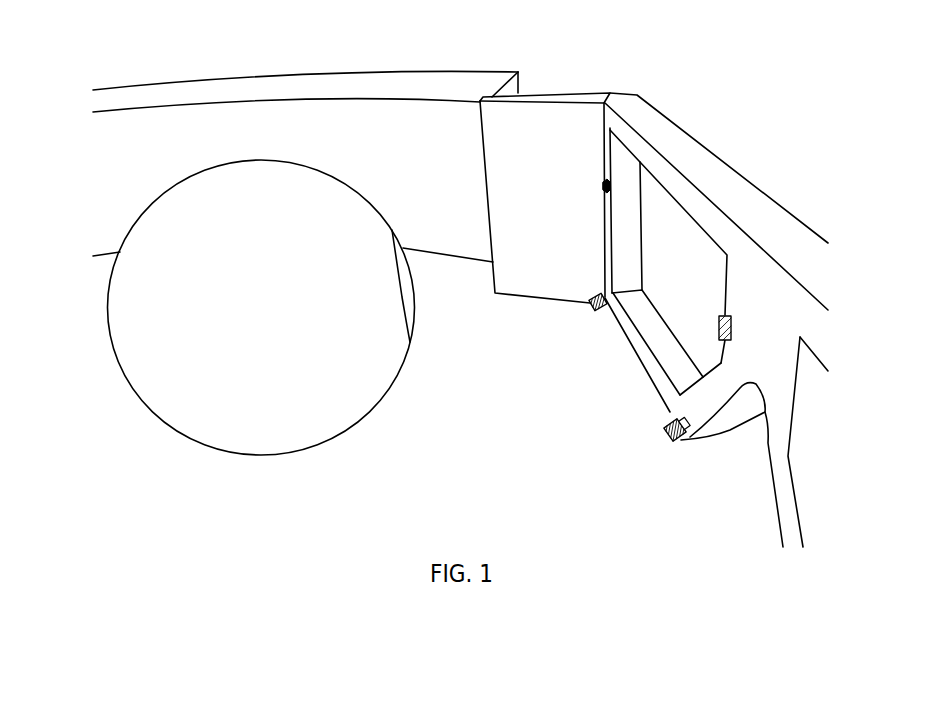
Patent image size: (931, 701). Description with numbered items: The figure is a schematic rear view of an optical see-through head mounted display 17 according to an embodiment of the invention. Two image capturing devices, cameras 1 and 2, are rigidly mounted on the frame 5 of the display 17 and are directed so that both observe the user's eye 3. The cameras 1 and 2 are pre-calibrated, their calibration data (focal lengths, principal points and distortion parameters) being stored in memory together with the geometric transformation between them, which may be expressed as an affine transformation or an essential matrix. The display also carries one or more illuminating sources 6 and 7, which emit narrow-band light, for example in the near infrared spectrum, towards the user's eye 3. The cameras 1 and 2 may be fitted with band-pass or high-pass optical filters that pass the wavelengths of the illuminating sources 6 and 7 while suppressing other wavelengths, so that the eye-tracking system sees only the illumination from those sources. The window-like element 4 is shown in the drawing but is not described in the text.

The camera 1 is at (593, 320).
The camera 2 is at (663, 438).
The user's eye 3 is at (420, 297).
The window glass 4 is at (667, 233).
The frame 5 is at (650, 367).
The illuminating source 6 is at (586, 192).
The illuminating source 7 is at (737, 333).
The optical see-through head mounted display 17 is at (475, 66).